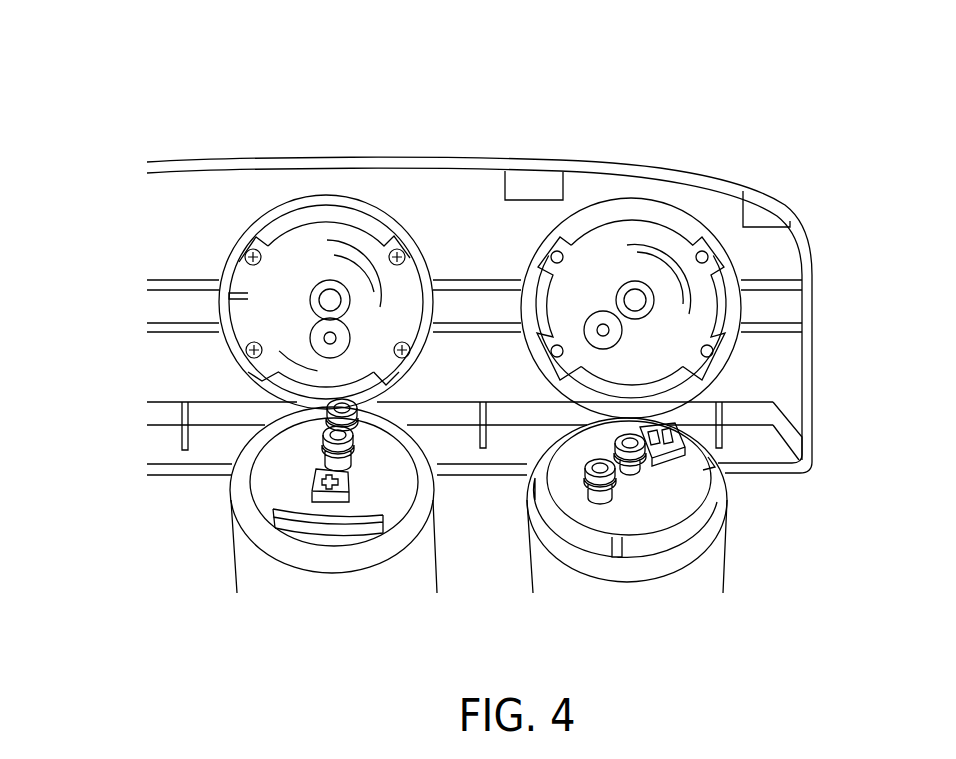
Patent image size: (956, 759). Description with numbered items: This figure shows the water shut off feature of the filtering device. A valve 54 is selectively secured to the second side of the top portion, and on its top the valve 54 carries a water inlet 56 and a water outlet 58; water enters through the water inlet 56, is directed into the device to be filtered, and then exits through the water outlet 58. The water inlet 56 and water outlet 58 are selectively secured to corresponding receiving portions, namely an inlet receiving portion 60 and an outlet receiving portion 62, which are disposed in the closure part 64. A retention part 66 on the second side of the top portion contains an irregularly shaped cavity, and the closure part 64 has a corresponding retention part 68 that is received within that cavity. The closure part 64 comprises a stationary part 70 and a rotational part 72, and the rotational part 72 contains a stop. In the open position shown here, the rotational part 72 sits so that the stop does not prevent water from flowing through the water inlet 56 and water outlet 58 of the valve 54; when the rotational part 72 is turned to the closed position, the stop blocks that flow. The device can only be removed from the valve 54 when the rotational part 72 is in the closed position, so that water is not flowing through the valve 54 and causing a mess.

The valve 54 is at (315, 453).
The water inlet 56 is at (394, 418).
The water outlet 58 is at (305, 222).
The inlet receiving portion 60 is at (310, 302).
The outlet receiving portion 62 is at (324, 346).
The closure part 64 is at (262, 287).
The retention part 66 is at (312, 487).
The retention part 68 is at (337, 243).
The stationary part 70 is at (233, 290).
The rotational part 72 is at (383, 290).